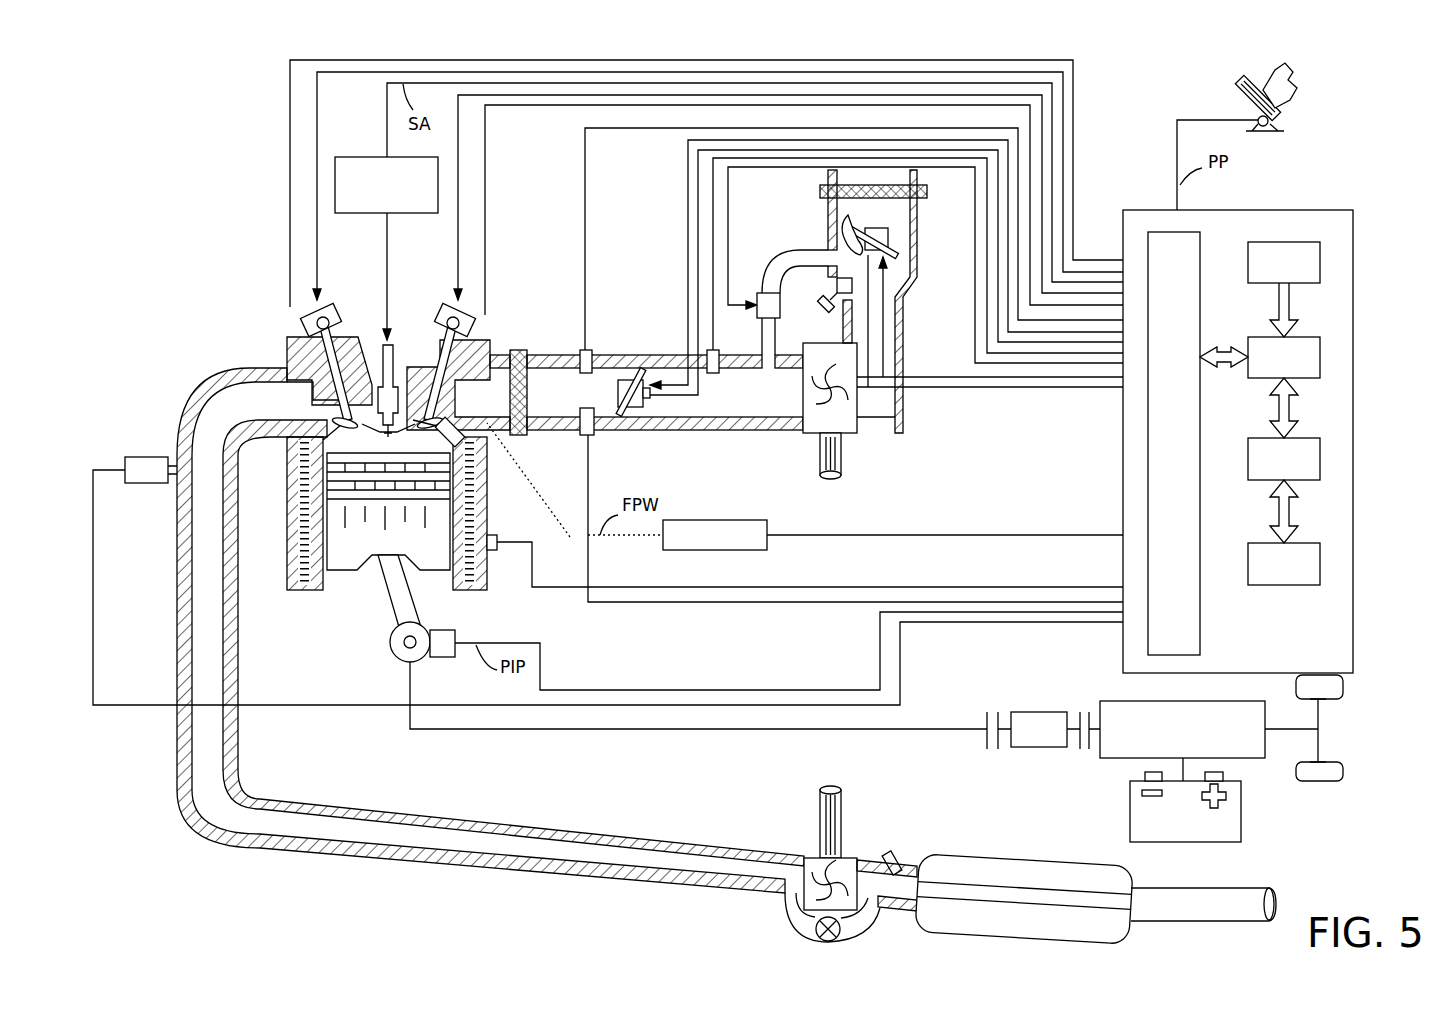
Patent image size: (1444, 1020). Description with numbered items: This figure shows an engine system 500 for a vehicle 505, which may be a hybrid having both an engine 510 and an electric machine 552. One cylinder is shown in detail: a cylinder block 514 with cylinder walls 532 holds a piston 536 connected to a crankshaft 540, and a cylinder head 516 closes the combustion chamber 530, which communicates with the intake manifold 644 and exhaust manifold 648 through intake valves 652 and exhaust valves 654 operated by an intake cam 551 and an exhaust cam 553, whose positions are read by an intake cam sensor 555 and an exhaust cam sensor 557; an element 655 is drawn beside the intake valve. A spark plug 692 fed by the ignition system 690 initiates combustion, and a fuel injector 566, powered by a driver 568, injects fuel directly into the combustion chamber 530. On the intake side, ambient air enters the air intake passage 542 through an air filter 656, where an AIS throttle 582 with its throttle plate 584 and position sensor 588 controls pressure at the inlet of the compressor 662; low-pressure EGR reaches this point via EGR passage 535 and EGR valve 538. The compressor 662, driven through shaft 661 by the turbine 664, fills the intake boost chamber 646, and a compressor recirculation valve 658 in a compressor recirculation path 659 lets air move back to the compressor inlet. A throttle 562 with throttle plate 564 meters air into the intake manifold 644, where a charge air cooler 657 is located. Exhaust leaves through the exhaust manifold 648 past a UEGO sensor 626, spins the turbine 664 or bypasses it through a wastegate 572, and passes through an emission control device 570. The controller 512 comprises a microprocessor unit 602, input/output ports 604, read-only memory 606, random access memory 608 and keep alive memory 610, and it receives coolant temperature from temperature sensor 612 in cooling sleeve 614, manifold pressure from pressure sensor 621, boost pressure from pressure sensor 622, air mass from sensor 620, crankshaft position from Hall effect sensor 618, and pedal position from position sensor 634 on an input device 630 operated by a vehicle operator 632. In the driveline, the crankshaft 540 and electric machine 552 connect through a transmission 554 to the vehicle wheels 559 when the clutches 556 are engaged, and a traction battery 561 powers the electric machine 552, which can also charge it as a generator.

The engine system 500 is at (140, 118).
The vehicle 505 is at (1360, 705).
The engine 510 is at (351, 457).
The electronic engine controller 512 is at (1281, 427).
The cylinder block 514 is at (280, 492).
The cylinder head 516 is at (500, 343).
The combustion chamber 530 is at (385, 440).
The cylinder walls 532 is at (330, 588).
The EGR passage 535 is at (836, 304).
The piston 536 is at (372, 537).
The EGR valve 538 is at (836, 285).
The crankshaft 540 is at (400, 660).
The air intake passage 542 is at (897, 224).
The intake cam 551 is at (443, 305).
The electric machine 552 is at (1037, 748).
The exhaust cam 553 is at (328, 305).
The transmission 554 is at (1243, 759).
The intake cam sensor 555 is at (454, 319).
The clutch 556 is at (987, 718).
The exhaust cam sensor 557 is at (307, 322).
The vehicle wheels 559 is at (1326, 783).
The traction battery 561 is at (1180, 844).
The throttle 562 is at (623, 368).
The throttle plate 564 is at (647, 382).
The fuel injector 566 is at (492, 450).
The driver 568 is at (745, 520).
The emission control device 570 is at (918, 922).
The wastegate 572 is at (816, 936).
The air intake system throttle 582 is at (840, 242).
The throttle plate 584 is at (862, 238).
The position sensor 588 is at (828, 239).
The microprocessor unit 602 is at (1322, 352).
The input/output ports 604 is at (1202, 242).
The read-only memory 606 is at (1322, 262).
The random access memory 608 is at (1322, 452).
The keep alive memory 610 is at (1322, 557).
The temperature sensor 612 is at (495, 536).
The cooling sleeve 614 is at (484, 572).
The Hall effect sensor 618 is at (437, 659).
The air mass sensor 620 is at (589, 437).
The pressure sensor 621 is at (586, 349).
The pressure sensor 622 is at (716, 350).
The UEGO sensor 626 is at (125, 458).
The input device 630 is at (1247, 100).
The vehicle operator 632 is at (1293, 86).
The position sensor 634 is at (1287, 126).
The intake manifold 644 is at (577, 406).
The intake boost chamber 646 is at (738, 406).
The exhaust manifold 648 is at (272, 411).
The intake valves 652 is at (455, 418).
The exhaust valves 654 is at (290, 378).
The intake valve 655 is at (478, 322).
The air filter 656 is at (927, 191).
The charge air cooler 657 is at (526, 437).
The compressor recirculation valve 658 is at (758, 293).
The compressor recirculation path 659 is at (821, 305).
The shaft 661 is at (842, 467).
The compressor 662 is at (842, 437).
The turbine 664 is at (806, 856).
The ignition system 690 is at (376, 157).
The spark plug 692 is at (393, 335).